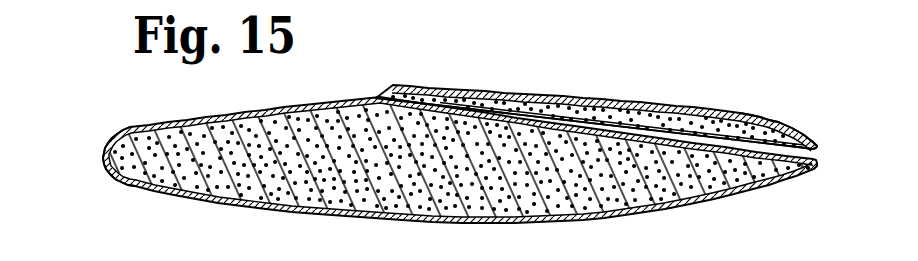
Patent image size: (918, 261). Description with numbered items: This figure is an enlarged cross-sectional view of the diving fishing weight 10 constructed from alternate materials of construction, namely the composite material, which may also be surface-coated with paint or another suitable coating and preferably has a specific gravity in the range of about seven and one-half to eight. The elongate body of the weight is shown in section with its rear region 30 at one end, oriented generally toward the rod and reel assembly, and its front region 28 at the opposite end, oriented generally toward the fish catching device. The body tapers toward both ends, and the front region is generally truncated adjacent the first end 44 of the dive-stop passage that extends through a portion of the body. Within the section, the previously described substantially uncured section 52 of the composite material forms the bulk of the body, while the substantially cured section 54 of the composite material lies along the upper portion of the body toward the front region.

The fishing weight 10 is at (120, 83).
The rear region 30 is at (103, 171).
The substantially uncured section 52 is at (330, 128).
The substantially cured section 54 is at (514, 87).
The front region 28 is at (823, 138).
The first end of passage 44 is at (819, 157).